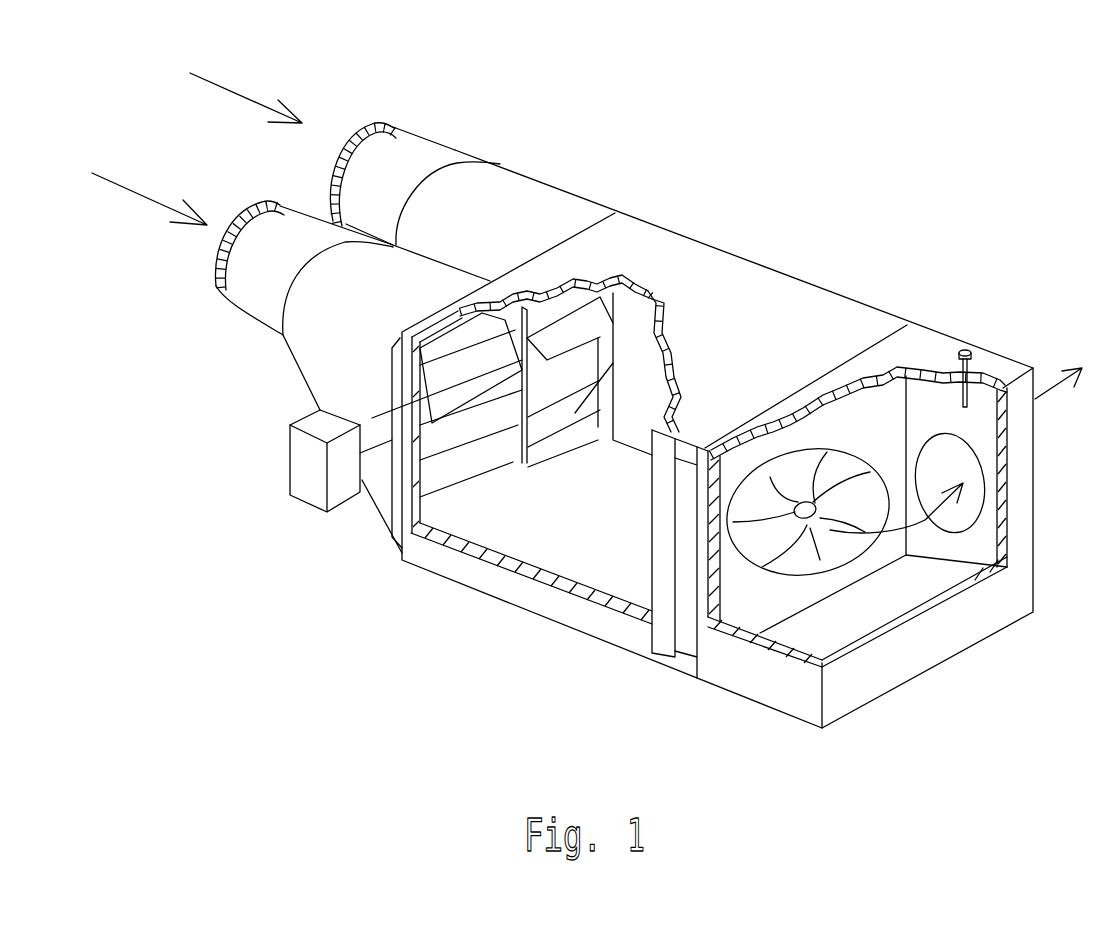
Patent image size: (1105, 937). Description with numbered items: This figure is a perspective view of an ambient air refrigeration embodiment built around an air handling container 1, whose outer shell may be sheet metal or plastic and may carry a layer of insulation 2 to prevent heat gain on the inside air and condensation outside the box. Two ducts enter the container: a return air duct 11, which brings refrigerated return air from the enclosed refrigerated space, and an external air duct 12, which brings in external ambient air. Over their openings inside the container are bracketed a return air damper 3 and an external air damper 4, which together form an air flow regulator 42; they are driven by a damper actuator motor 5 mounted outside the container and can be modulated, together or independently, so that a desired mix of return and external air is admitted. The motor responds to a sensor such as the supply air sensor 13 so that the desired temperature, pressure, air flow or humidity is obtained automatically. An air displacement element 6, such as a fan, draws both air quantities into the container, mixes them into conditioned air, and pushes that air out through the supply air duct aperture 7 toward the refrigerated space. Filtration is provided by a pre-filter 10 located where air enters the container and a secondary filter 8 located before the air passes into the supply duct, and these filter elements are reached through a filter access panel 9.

The air handling container 1 is at (442, 563).
The insulation 2 is at (473, 547).
The return air damper 3 is at (493, 450).
The external air damper 4 is at (573, 412).
The damper actuator motor 5 is at (313, 473).
The air displacement element 6 is at (742, 565).
The supply air duct aperture 7 is at (963, 540).
The secondary filter 8 is at (663, 628).
The filter access panel 9 is at (682, 640).
The pre-filter 10 is at (390, 517).
The return air duct 11 is at (263, 200).
The external air duct 12 is at (350, 127).
The supply air sensor 13 is at (973, 352).
The air flow regulator 42 is at (635, 348).